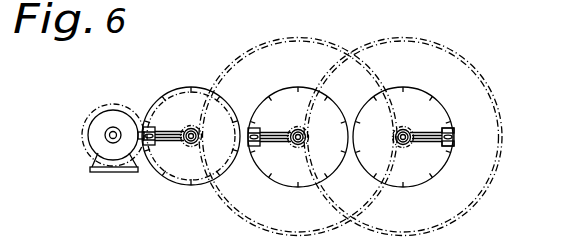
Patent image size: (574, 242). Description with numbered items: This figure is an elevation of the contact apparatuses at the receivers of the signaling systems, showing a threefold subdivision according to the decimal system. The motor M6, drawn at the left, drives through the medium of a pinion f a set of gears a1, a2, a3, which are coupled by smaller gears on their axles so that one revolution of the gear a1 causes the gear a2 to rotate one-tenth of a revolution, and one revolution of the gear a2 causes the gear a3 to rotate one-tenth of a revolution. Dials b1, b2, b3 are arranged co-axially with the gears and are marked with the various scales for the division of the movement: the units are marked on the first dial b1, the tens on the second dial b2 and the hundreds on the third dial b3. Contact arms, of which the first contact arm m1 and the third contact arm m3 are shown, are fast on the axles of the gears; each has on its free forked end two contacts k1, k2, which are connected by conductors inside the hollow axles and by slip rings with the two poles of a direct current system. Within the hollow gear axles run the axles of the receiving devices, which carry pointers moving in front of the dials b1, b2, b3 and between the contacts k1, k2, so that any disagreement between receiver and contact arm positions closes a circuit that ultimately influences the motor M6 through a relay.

The pinion f is at (104, 108).
The motor M6 is at (113, 158).
The contact arm m1 is at (165, 144).
The gear a1 is at (172, 92).
The dial b1 is at (197, 67).
The gear a2 is at (302, 47).
The dial b2 is at (292, 87).
The gear a3 is at (467, 81).
The dial b3 is at (434, 80).
The contact k1 is at (453, 128).
The contact arm m3 is at (454, 140).
The contact k2 is at (452, 148).